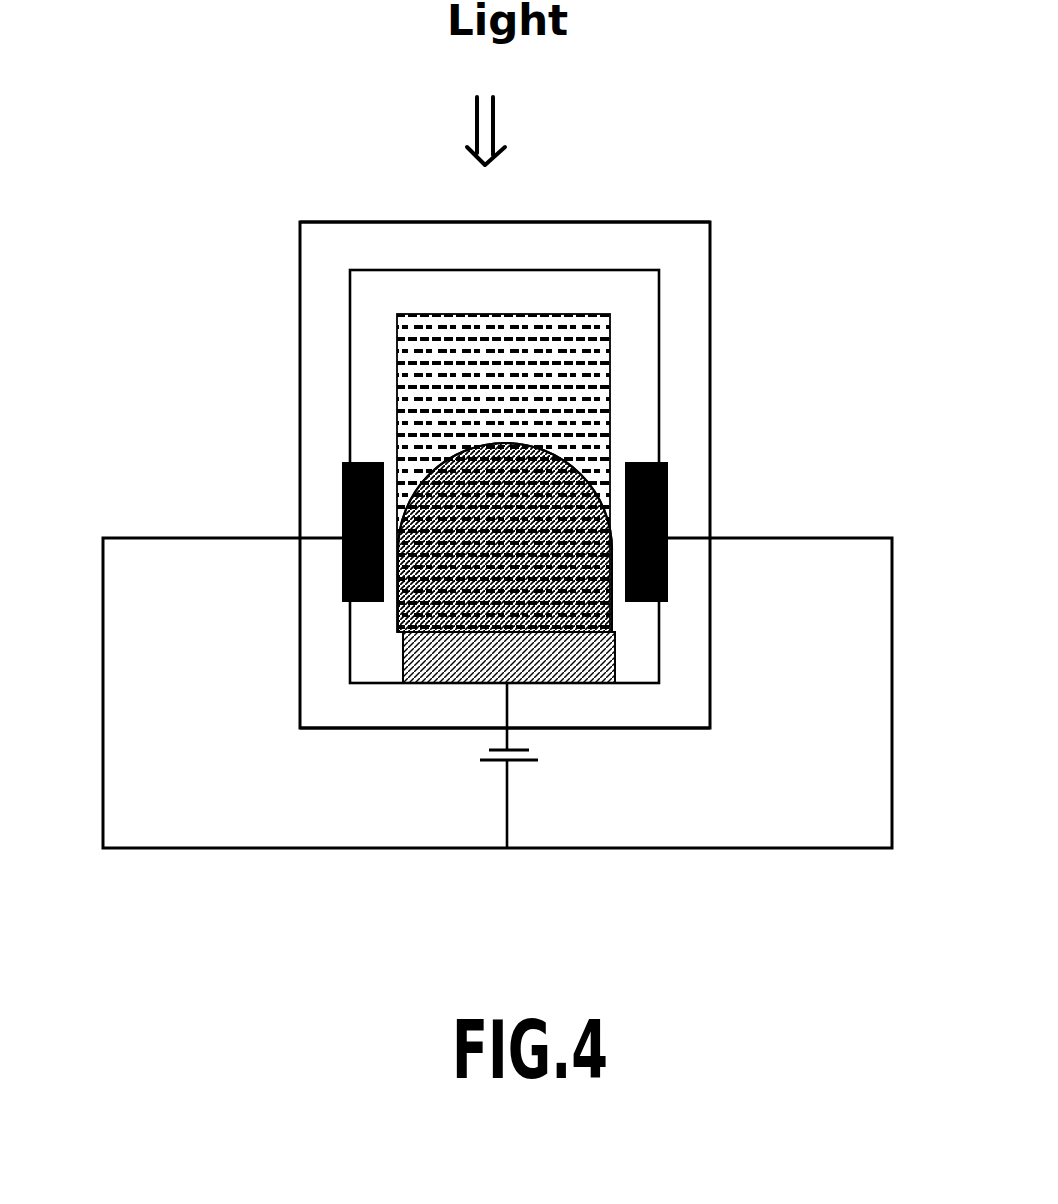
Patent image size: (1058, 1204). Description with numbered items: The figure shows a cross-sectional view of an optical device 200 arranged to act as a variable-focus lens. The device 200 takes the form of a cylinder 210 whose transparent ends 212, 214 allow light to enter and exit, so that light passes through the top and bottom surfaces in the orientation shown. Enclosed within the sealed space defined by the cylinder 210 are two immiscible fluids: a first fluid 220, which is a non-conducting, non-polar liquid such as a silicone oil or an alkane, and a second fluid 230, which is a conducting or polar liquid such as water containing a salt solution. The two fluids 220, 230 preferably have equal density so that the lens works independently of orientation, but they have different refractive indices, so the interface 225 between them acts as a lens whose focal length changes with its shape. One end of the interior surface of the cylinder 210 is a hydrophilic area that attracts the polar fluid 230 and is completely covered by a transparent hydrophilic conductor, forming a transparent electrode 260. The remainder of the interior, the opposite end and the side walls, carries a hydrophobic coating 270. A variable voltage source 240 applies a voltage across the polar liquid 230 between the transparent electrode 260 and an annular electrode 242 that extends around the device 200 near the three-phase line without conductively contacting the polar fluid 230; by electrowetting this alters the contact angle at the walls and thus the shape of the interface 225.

The device 200 is at (501, 459).
The cylinder 210 is at (672, 270).
The transparent end 212 is at (362, 220).
The transparent end 214 is at (383, 730).
The first fluid 220 is at (557, 365).
The interface 225 is at (572, 467).
The second fluid 230 is at (526, 542).
The variable voltage source 240 is at (513, 762).
The annular electrode 242 is at (342, 503).
The transparent electrode 260 is at (597, 683).
The hydrophobic coating 270 is at (362, 328).